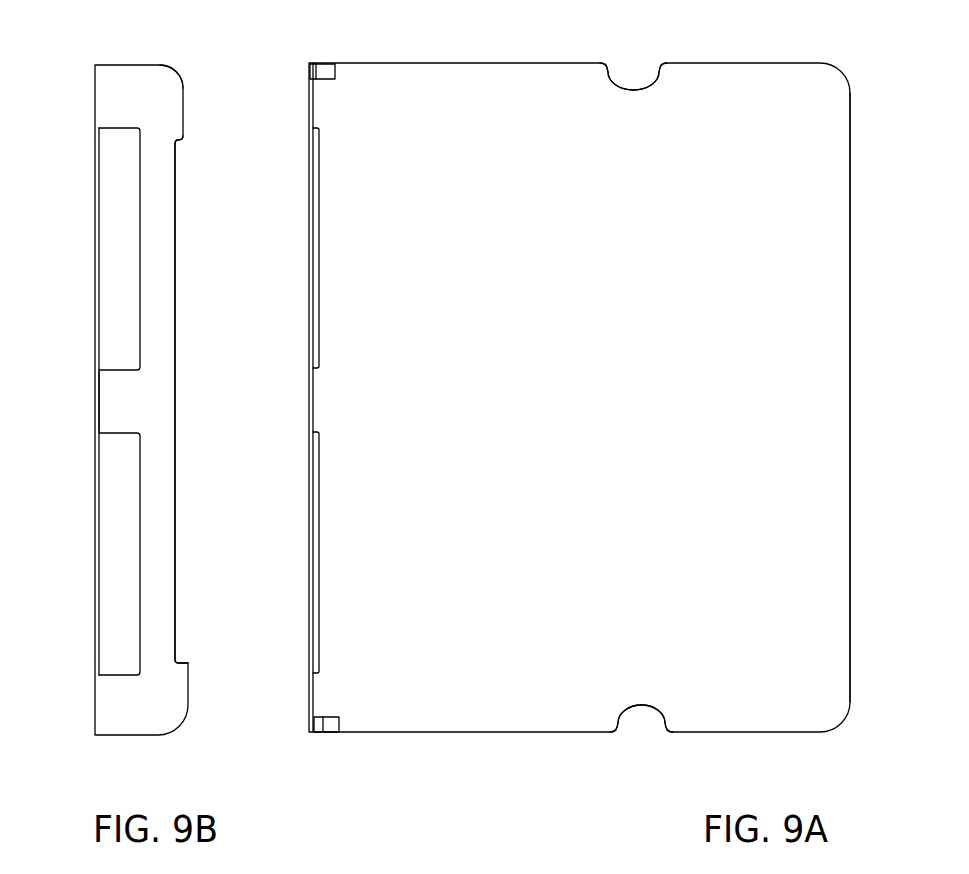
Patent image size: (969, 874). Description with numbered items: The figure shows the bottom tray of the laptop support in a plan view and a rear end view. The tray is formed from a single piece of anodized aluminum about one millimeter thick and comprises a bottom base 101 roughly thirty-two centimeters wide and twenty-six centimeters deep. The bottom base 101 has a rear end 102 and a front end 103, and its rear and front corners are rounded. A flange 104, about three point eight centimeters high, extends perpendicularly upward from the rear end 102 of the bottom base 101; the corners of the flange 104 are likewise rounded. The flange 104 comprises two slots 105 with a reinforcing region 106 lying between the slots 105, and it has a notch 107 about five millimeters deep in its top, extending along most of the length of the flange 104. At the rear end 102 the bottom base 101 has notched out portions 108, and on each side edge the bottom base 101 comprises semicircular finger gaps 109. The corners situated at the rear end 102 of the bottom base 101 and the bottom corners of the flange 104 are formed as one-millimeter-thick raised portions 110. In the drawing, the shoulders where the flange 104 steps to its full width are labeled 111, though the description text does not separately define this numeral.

In FIG. 9A, the bottom base 101 is at (420, 725).
In FIG. 9B, the rear end 102 is at (98, 296).
In FIG. 9A, the front end 103 is at (851, 270).
In FIG. 9B, the flange 104 is at (134, 80).
In FIG. 9A, the flange 104 is at (312, 690).
In FIG. 9B, the slots 105 is at (108, 208).
In FIG. 9B, the reinforcing region 106 is at (110, 402).
In FIG. 9B, the notch 107 is at (183, 363).
In FIG. 9A, the notched out portions 108 is at (316, 222).
In FIG. 9A, the semicircular finger gaps 109 is at (628, 77).
In FIG. 9A, the raised portions 110 is at (325, 70).
In FIG. 9B, the shoulder 111 is at (180, 140).